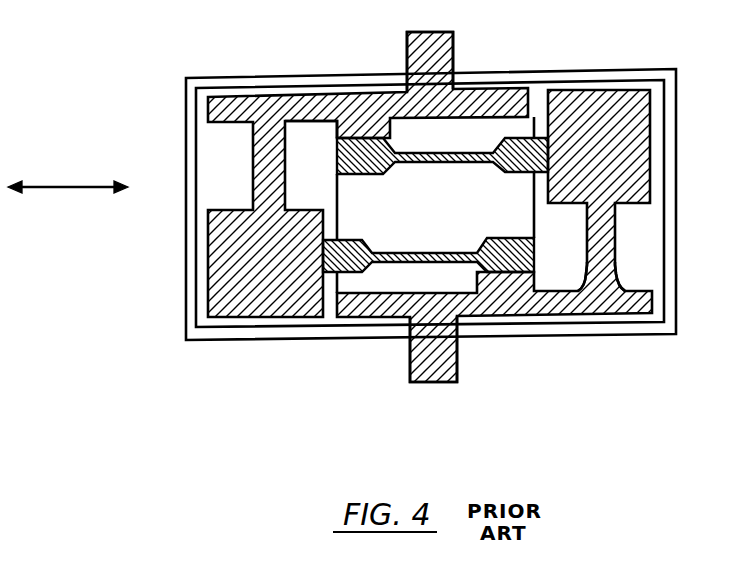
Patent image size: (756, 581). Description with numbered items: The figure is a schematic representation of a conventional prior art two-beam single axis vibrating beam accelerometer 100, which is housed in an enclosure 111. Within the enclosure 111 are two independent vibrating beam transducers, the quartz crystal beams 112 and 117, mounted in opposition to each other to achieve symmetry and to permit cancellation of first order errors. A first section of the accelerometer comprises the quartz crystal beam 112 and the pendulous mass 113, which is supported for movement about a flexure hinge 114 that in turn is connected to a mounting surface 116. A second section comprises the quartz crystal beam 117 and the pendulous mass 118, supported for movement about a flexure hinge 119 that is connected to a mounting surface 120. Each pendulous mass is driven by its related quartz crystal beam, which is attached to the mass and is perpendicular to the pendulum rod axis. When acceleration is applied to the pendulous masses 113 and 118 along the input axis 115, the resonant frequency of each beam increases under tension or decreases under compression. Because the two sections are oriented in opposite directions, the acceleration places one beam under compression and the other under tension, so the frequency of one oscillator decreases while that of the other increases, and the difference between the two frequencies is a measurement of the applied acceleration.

The vibrating beam accelerometer 100 is at (375, 203).
The enclosure 111 is at (298, 74).
The quartz crystal beam 112 is at (437, 252).
The pendulous mass 113 is at (214, 250).
The flexure hinge 114 is at (288, 124).
The input axis 115 is at (101, 192).
The mounting surface 116 is at (451, 46).
The quartz crystal beam 117 is at (462, 164).
The pendulous mass 118 is at (640, 160).
The flexure hinge 119 is at (609, 276).
The mounting surface 120 is at (457, 359).